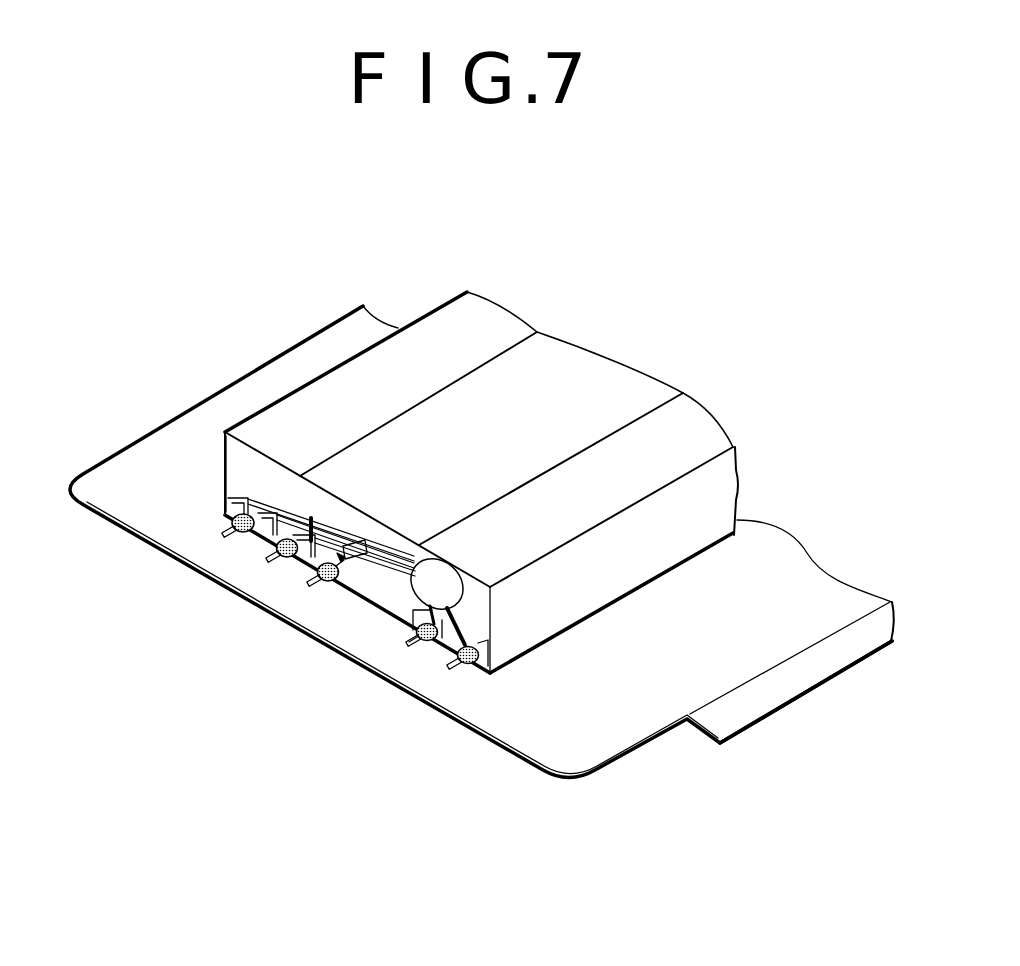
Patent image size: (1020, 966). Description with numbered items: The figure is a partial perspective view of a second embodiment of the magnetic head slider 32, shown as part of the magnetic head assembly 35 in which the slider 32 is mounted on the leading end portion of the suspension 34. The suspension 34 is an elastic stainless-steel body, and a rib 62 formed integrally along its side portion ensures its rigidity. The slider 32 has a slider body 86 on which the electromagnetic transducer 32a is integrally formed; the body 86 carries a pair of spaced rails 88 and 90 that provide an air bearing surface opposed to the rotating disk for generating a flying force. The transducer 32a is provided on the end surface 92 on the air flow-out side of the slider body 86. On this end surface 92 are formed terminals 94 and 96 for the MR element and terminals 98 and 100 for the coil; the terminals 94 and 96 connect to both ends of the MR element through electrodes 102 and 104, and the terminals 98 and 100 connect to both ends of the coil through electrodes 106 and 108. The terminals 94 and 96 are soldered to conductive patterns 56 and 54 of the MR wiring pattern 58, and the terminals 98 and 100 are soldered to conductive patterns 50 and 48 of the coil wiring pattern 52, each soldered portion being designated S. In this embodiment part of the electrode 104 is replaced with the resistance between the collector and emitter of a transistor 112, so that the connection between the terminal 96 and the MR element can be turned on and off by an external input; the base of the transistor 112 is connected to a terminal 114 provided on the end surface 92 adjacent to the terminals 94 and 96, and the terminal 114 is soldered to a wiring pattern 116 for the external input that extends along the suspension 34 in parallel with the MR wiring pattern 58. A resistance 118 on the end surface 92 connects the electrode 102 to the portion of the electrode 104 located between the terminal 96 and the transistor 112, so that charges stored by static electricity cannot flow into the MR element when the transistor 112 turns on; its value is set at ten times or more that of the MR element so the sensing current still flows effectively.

The magnetic head slider 32 is at (316, 333).
The electromagnetic transducer 32a is at (445, 568).
The suspension 34 is at (148, 440).
The magnetic head assembly 35 is at (216, 338).
The conductive pattern 48 is at (448, 673).
The conductive pattern 50 is at (406, 652).
The coil wiring pattern 52 is at (383, 743).
The conductive pattern 54 is at (268, 565).
The conductive pattern 56 is at (224, 540).
The MR wiring pattern 58 is at (193, 628).
The rib 62 is at (767, 707).
The slider body 86 is at (622, 585).
The rail 88 is at (478, 302).
The rail 90 is at (700, 406).
The end surface 92 is at (222, 445).
The terminal 94 is at (232, 507).
The terminal 96 is at (272, 525).
The terminal 98 is at (412, 628).
The terminal 100 is at (487, 640).
The electrode 102 is at (277, 513).
The electrode 104 is at (390, 560).
The electrode 106 is at (405, 608).
The electrode 108 is at (458, 633).
The transistor 112 is at (350, 543).
The terminal 114 is at (306, 592).
The wiring pattern 116 is at (316, 600).
The resistance 118 is at (357, 485).
The soldered portion S is at (232, 521).